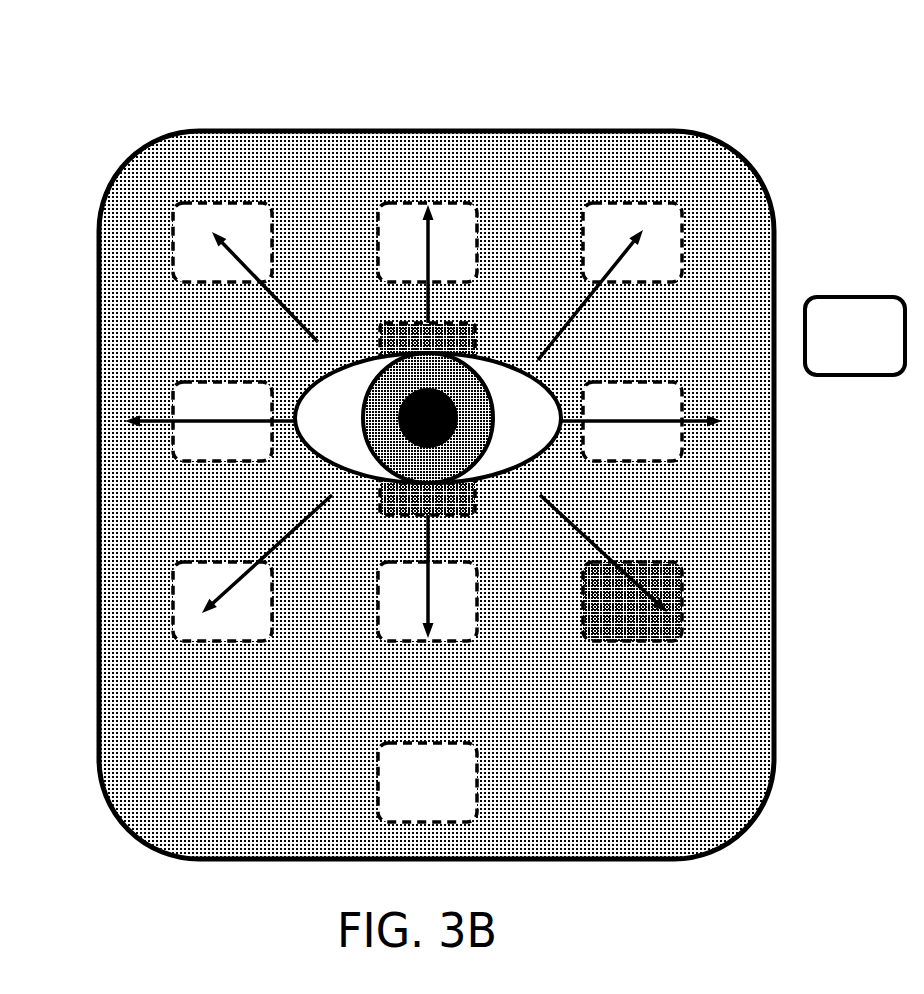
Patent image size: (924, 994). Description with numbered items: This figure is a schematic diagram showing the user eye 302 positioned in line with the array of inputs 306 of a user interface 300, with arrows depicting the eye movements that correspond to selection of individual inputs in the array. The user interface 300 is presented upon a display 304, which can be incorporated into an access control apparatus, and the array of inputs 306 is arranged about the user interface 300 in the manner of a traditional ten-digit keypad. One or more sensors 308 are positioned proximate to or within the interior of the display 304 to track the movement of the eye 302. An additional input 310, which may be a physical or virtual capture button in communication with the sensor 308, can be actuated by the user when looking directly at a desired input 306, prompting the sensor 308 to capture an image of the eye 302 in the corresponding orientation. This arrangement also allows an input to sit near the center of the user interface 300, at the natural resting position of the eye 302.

The user interface 300 is at (491, 78).
The eye 302 is at (497, 362).
The display 304 is at (620, 132).
The array of inputs 306 is at (623, 640).
The sensor 308 is at (380, 342).
The additional input 310 is at (850, 297).